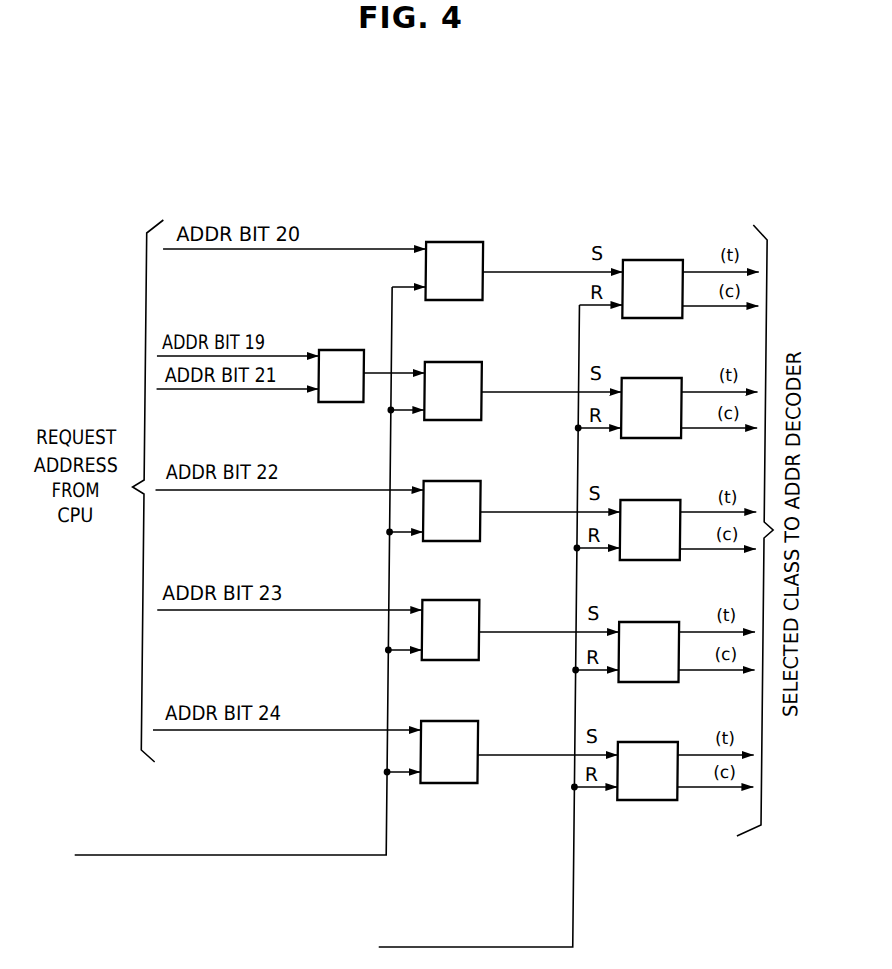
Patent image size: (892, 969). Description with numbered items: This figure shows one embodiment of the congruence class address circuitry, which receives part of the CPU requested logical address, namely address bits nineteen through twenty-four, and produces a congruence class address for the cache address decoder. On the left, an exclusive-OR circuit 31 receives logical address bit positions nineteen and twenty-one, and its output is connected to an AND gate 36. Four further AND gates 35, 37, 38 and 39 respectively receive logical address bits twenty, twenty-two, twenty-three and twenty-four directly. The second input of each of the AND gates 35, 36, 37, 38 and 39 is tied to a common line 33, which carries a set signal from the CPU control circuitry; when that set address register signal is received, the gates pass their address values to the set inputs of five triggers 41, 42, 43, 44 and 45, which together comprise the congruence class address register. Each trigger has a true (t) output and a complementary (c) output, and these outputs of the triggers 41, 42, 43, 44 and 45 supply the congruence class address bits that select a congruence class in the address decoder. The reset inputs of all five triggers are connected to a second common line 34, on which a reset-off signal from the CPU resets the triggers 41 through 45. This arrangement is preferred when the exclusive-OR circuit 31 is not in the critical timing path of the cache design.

The exclusive-OR circuit 31 is at (340, 347).
The line 33 is at (388, 834).
The line 34 is at (585, 882).
The AND gate 35 is at (476, 253).
The AND gate 36 is at (469, 366).
The AND gate 37 is at (478, 494).
The AND gate 38 is at (478, 617).
The AND gate 39 is at (476, 734).
The trigger 41 is at (670, 263).
The trigger 42 is at (670, 383).
The trigger 43 is at (666, 503).
The trigger 44 is at (668, 625).
The trigger 45 is at (668, 747).